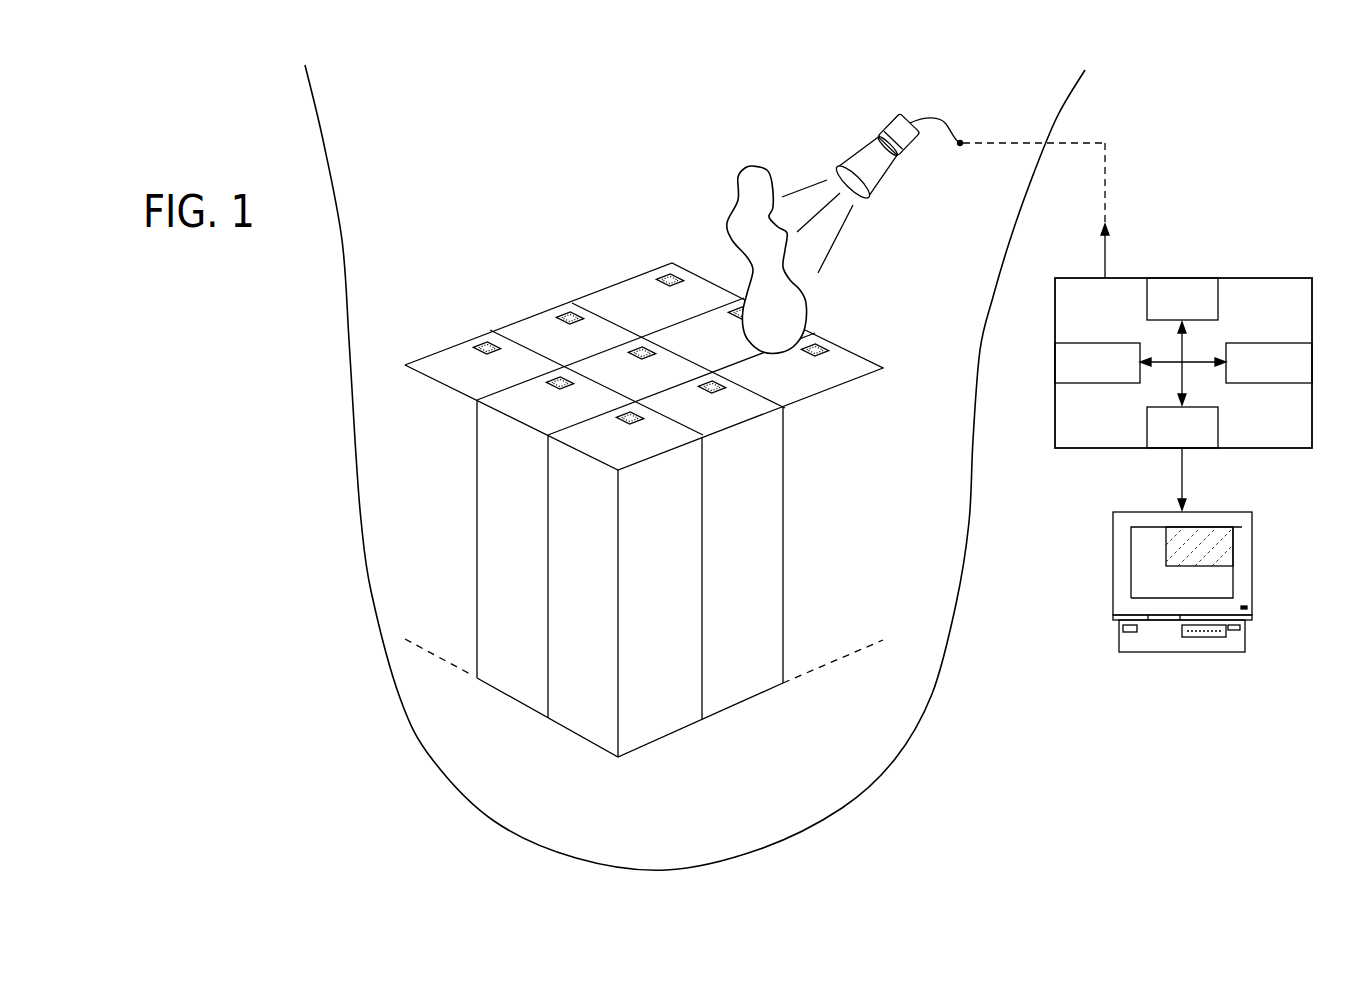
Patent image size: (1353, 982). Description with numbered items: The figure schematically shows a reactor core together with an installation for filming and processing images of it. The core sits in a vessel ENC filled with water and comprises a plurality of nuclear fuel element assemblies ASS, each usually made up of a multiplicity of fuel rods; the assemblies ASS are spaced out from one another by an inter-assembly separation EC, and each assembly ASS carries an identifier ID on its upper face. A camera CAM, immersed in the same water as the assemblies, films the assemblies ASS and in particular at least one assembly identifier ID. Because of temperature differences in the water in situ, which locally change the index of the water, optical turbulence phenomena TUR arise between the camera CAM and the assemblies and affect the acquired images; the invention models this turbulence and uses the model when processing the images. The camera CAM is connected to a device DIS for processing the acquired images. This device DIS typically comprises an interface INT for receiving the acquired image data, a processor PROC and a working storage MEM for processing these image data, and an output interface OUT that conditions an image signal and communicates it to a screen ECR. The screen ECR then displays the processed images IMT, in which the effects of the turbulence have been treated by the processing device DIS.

The vessel ENC is at (404, 706).
The nuclear fuel element assembly ASS is at (657, 722).
The inter-assembly separation EC is at (547, 512).
The identifier ID is at (481, 341).
The optical turbulence phenomena TUR is at (745, 165).
The camera CAM is at (893, 122).
The device for processing the images DIS is at (1183, 357).
The interface INT is at (1182, 299).
The working storage MEM is at (1097, 363).
The processor PROC is at (1269, 363).
The output interface OUT is at (1182, 427).
The screen ECR is at (1120, 575).
The processed image IMT is at (1215, 552).